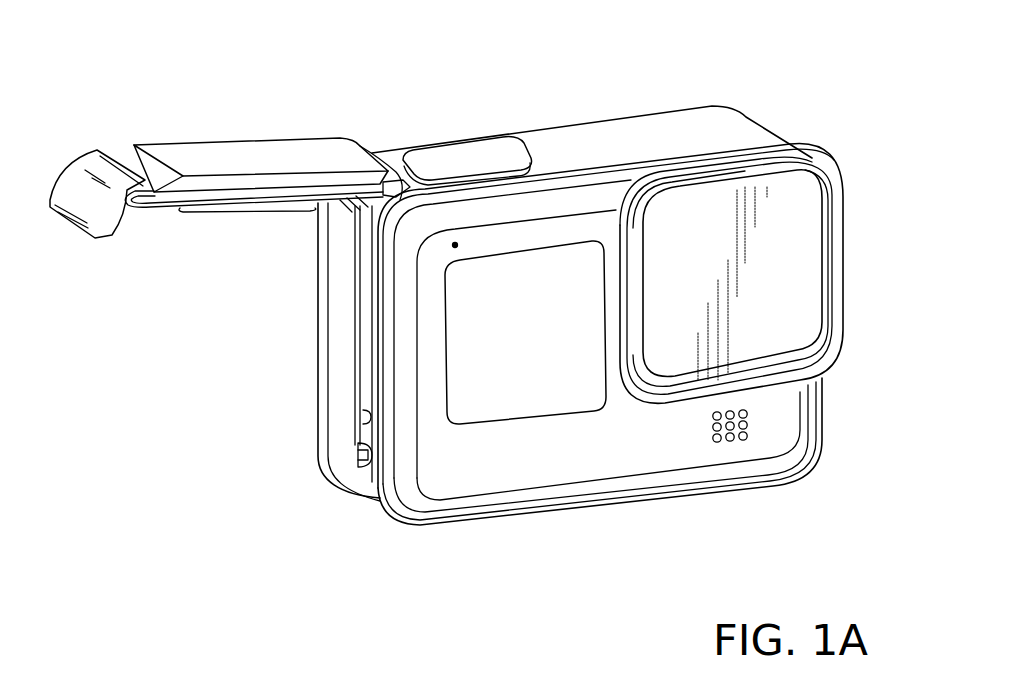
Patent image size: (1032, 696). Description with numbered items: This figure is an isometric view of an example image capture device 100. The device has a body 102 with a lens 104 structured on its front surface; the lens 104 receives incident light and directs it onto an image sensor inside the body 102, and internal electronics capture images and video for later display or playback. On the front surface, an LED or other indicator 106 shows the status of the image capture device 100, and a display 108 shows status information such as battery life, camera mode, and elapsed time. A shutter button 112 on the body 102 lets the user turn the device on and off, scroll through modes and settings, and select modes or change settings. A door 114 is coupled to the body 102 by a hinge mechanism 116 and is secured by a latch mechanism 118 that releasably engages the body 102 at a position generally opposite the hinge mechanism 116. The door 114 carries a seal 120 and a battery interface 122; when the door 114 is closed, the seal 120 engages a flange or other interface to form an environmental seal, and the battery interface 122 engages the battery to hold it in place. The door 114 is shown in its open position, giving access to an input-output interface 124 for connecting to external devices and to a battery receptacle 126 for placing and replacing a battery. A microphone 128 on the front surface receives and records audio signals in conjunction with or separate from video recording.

The image capture device 100 is at (800, 49).
The body 102 is at (636, 131).
The lens 104 is at (802, 280).
The indicator 106 is at (452, 246).
The display 108 is at (525, 393).
The shutter button 112 is at (418, 157).
The door 114 is at (272, 147).
The hinge mechanism 116 is at (400, 178).
The latch mechanism 118 is at (73, 183).
The seal 120 is at (164, 210).
The battery interface 122 is at (218, 213).
The input-output (I/O) interface 124 is at (360, 455).
The battery receptacle 126 is at (373, 235).
The microphone 128 is at (730, 443).